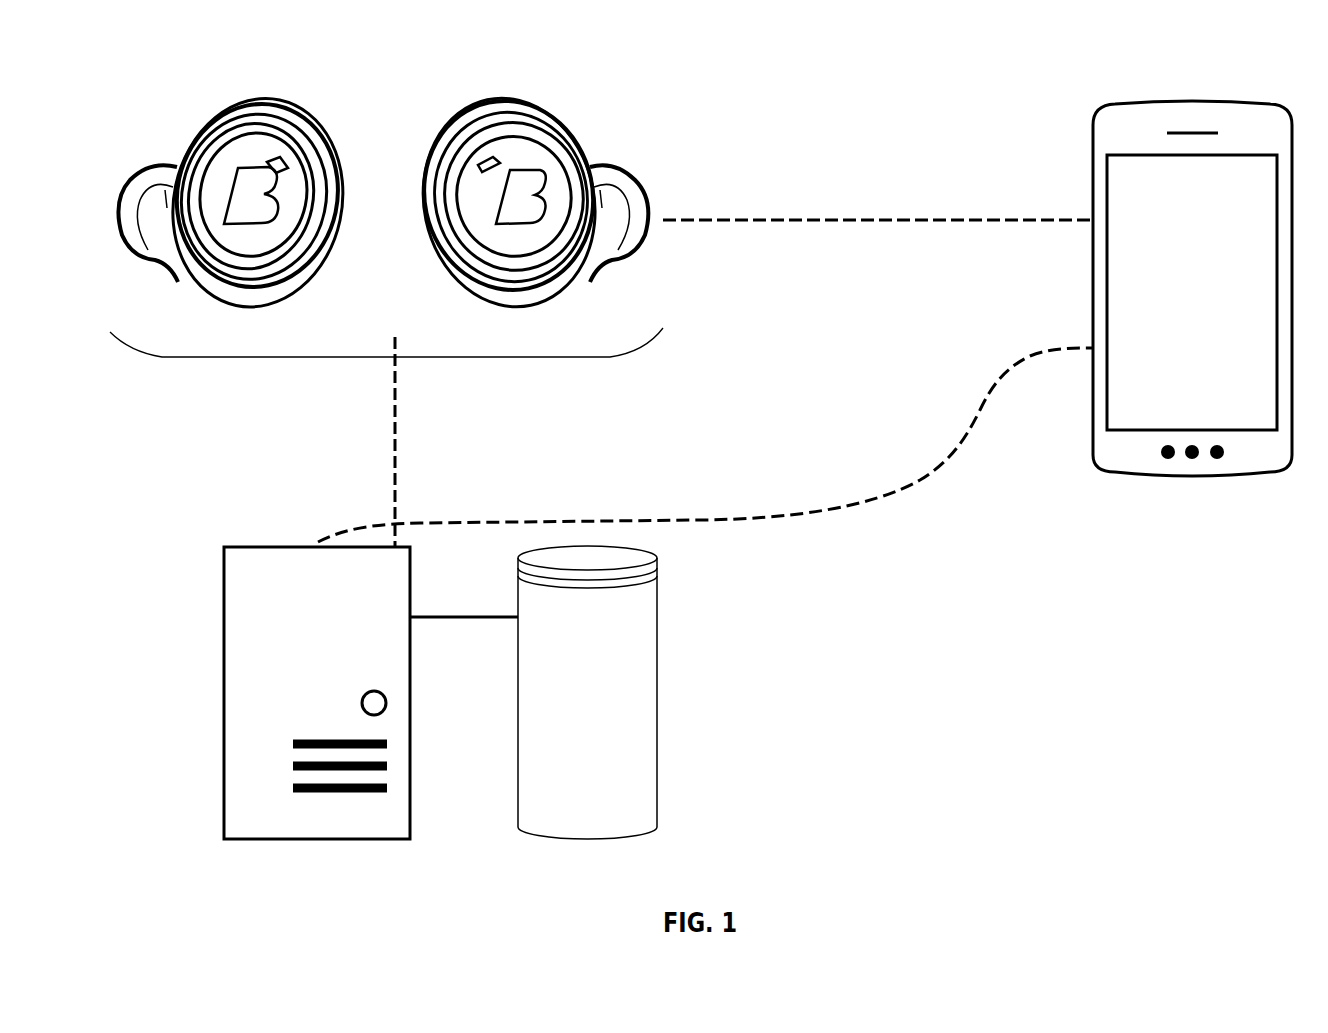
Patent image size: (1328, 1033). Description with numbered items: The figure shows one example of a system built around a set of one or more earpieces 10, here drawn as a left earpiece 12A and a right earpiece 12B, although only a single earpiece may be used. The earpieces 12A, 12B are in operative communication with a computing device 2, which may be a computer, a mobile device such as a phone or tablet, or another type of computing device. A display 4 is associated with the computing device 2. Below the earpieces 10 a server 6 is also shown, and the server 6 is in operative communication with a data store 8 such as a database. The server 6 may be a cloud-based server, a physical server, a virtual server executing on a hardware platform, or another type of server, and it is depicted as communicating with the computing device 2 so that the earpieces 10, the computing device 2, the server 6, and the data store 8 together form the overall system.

The computing device 2 is at (1102, 263).
The display 4 is at (1118, 320).
The server 6 is at (313, 560).
The data store 8 is at (633, 617).
The earpieces 10 is at (372, 358).
The left earpiece 12A is at (252, 96).
The right earpiece 12B is at (518, 96).